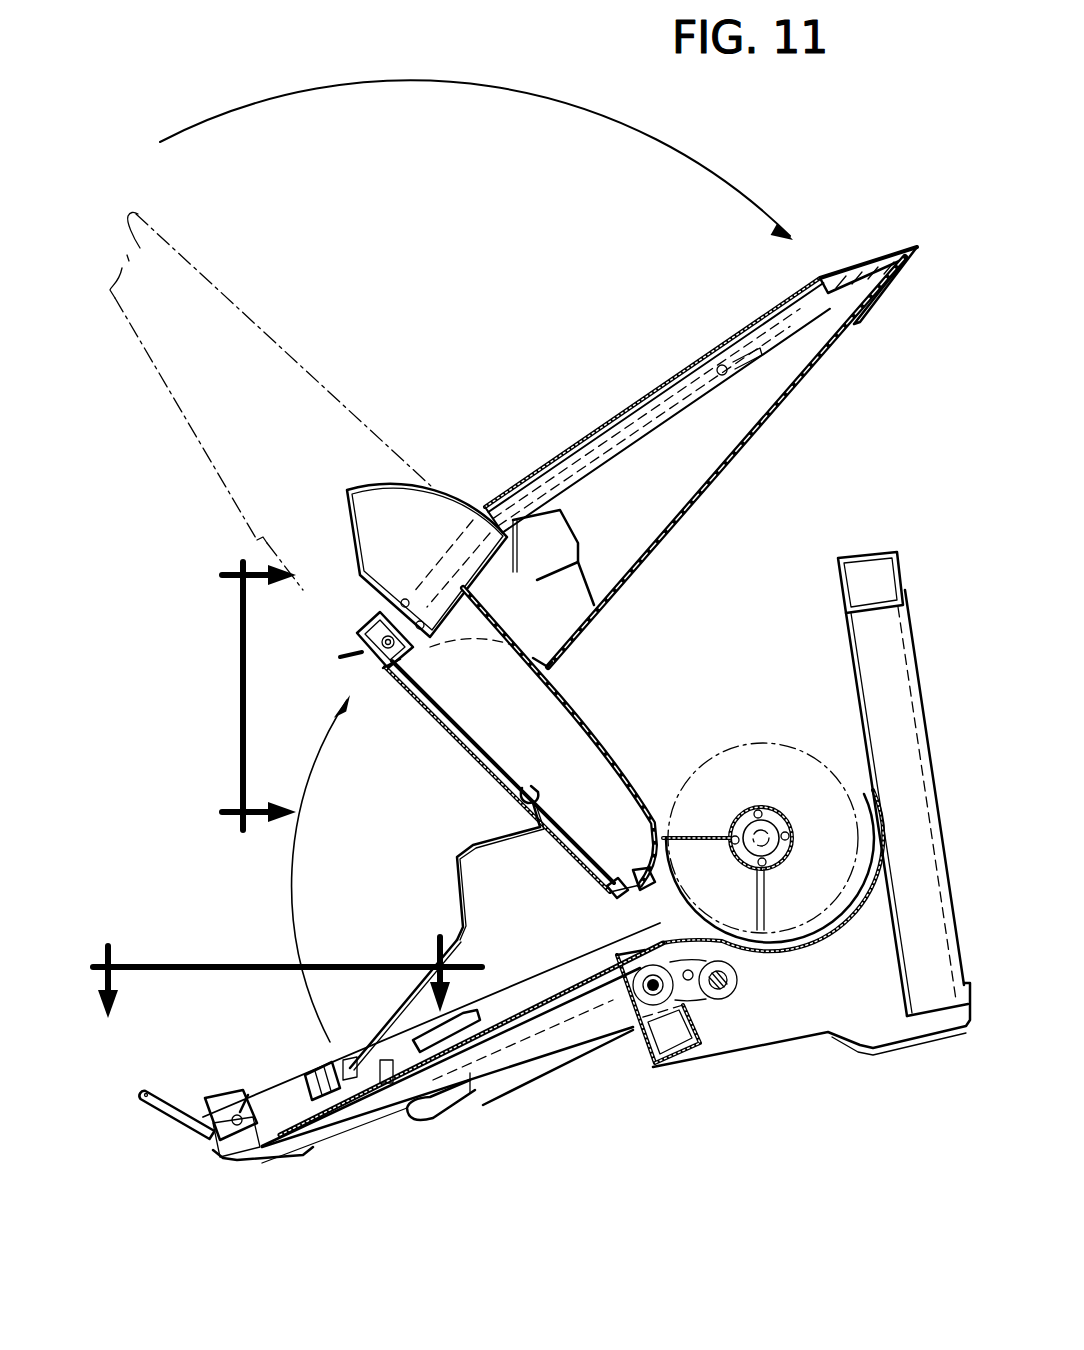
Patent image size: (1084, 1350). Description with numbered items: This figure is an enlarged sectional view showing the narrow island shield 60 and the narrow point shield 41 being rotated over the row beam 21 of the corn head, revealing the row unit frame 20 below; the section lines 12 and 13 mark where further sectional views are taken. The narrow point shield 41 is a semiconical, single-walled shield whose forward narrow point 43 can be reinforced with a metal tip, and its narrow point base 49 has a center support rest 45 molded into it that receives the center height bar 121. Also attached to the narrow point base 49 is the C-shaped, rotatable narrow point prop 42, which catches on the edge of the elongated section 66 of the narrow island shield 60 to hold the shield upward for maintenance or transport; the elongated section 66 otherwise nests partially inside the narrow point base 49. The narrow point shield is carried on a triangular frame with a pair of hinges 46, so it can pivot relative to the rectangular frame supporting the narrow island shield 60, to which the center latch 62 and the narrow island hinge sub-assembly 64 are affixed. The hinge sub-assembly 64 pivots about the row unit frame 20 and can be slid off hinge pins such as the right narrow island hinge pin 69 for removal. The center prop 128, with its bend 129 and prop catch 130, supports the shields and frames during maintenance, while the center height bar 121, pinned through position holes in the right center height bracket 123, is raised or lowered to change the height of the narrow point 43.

The section line 12- 12 is at (287, 961).
The section line 13- 13 is at (241, 694).
The row unit frame 20 is at (368, 1117).
The row beam 21 is at (682, 1050).
The narrow point shield 41 is at (735, 446).
The narrow point prop 42 is at (515, 573).
The narrow point 43 is at (918, 258).
The center support rest 45 is at (568, 580).
The hinges 46 is at (380, 660).
The narrow point base 49 is at (527, 490).
The narrow island shield 60 is at (618, 772).
The center latch 62 is at (350, 636).
The narrow island hinge sub-assembly 64 is at (753, 955).
The elongated section 66 is at (549, 667).
The right narrow island hinge pin 69 is at (647, 893).
The center height bar 121 is at (160, 1118).
The right center height bracket 123 is at (250, 1152).
The center prop 128 is at (463, 942).
The bend 129 is at (467, 843).
The prop catch 130 is at (528, 785).